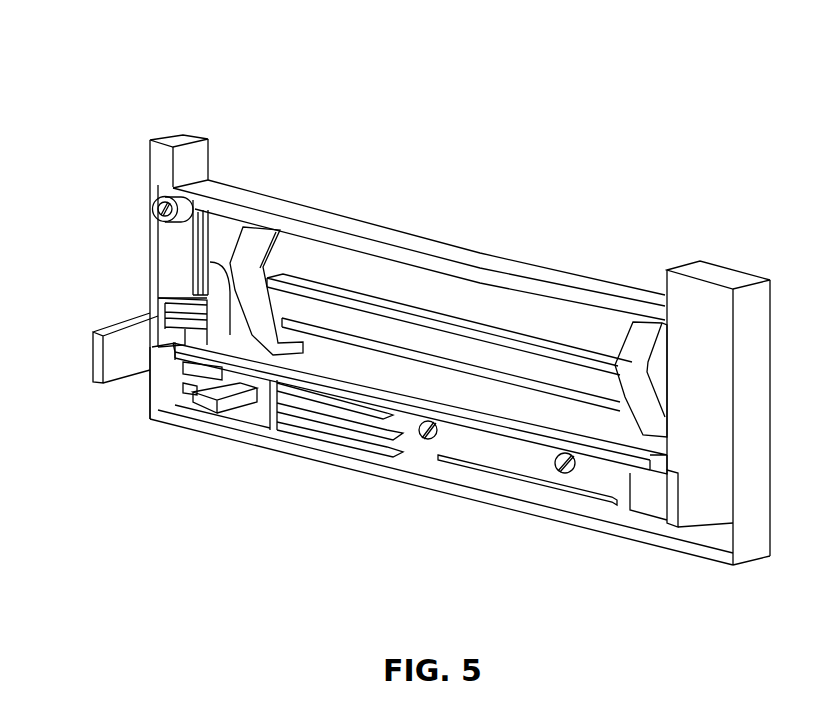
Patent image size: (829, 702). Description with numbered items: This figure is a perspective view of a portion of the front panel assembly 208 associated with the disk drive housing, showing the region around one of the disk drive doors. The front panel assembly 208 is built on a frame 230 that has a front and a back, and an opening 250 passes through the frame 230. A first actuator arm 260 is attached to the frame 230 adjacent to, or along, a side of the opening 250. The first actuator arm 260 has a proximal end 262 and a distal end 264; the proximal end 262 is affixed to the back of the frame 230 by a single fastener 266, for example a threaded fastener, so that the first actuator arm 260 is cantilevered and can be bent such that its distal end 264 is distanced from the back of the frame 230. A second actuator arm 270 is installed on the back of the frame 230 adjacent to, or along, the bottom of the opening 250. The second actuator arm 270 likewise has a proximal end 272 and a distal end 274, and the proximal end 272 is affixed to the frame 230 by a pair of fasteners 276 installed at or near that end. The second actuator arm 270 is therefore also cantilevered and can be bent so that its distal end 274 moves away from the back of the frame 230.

The front panel assembly 208 is at (548, 154).
The frame 230 is at (197, 157).
The opening 250 is at (343, 247).
The first actuator arm 260 is at (173, 283).
The proximal end 262 is at (172, 248).
The distal end 264 is at (170, 327).
The single fastener 266 is at (159, 196).
The second actuator arm 270 is at (345, 418).
The proximal end 272 is at (603, 485).
The distal end 274 is at (173, 385).
The pair of fasteners 276 is at (417, 438).